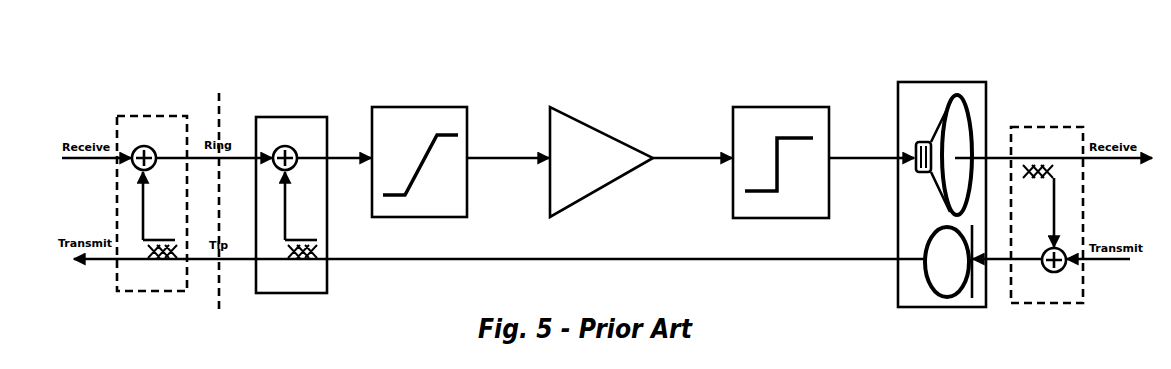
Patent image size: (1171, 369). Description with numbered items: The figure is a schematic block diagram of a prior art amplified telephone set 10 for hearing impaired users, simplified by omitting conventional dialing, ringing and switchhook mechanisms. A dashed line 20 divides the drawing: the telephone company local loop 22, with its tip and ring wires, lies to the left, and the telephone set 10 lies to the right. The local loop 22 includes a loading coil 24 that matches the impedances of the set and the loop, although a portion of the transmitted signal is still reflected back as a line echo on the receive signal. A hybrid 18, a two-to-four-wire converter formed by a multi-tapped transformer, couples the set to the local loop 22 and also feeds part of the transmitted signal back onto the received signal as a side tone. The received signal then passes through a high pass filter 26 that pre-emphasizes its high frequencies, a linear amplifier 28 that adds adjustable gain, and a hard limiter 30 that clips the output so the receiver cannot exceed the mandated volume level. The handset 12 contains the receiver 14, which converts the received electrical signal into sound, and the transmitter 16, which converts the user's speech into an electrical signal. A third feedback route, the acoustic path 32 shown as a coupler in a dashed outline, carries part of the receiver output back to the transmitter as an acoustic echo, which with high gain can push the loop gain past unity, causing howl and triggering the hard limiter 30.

The amplified telephone set 10 is at (606, 68).
The handset 12 is at (965, 194).
The receiver 14 is at (938, 142).
The transmitter 16 is at (935, 230).
The hybrid 18 is at (288, 117).
The dashed line 20 is at (219, 293).
The local loop 22 is at (145, 96).
The loading coil 24 is at (154, 293).
The high pass filter 26 is at (405, 107).
The linear amplifier 28 is at (573, 119).
The hard limiter 30 is at (750, 107).
The acoustic path 32 is at (1025, 305).